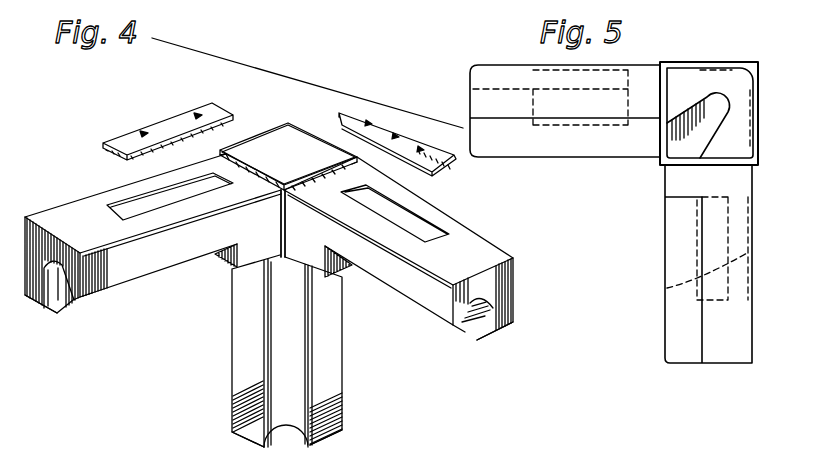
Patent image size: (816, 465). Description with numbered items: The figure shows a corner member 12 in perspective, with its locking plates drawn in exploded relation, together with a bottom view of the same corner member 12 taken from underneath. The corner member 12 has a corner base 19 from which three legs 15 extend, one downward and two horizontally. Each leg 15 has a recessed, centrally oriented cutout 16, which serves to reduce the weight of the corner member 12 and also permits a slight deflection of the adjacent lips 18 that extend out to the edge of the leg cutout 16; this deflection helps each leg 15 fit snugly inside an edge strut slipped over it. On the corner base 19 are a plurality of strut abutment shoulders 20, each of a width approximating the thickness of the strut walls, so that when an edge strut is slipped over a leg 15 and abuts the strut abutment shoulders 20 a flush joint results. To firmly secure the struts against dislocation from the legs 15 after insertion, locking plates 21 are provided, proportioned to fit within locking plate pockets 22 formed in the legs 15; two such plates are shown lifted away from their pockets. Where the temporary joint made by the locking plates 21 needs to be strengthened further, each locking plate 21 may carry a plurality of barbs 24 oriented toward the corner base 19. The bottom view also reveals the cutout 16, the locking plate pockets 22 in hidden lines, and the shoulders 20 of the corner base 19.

In FIG. 4, the corner member 12 is at (268, 120).
In FIG. 4, the leg 15 is at (163, 257).
In FIG. 5, the leg 15 is at (498, 82).
In FIG. 4, the cutout 16 is at (72, 293).
In FIG. 5, the cutout 16 is at (532, 143).
In FIG. 4, the lip 18 is at (58, 313).
In FIG. 4, the corner base 19 is at (300, 148).
In FIG. 4, the strut abutment shoulder 20 is at (222, 152).
In FIG. 5, the strut abutment shoulder 20 is at (658, 62).
In FIG. 4, the locking plate 21 is at (121, 141).
In FIG. 4, the locking plate pocket 22 is at (143, 210).
In FIG. 5, the locking plate pocket 22 is at (610, 97).
In FIG. 4, the barb 24 is at (197, 112).